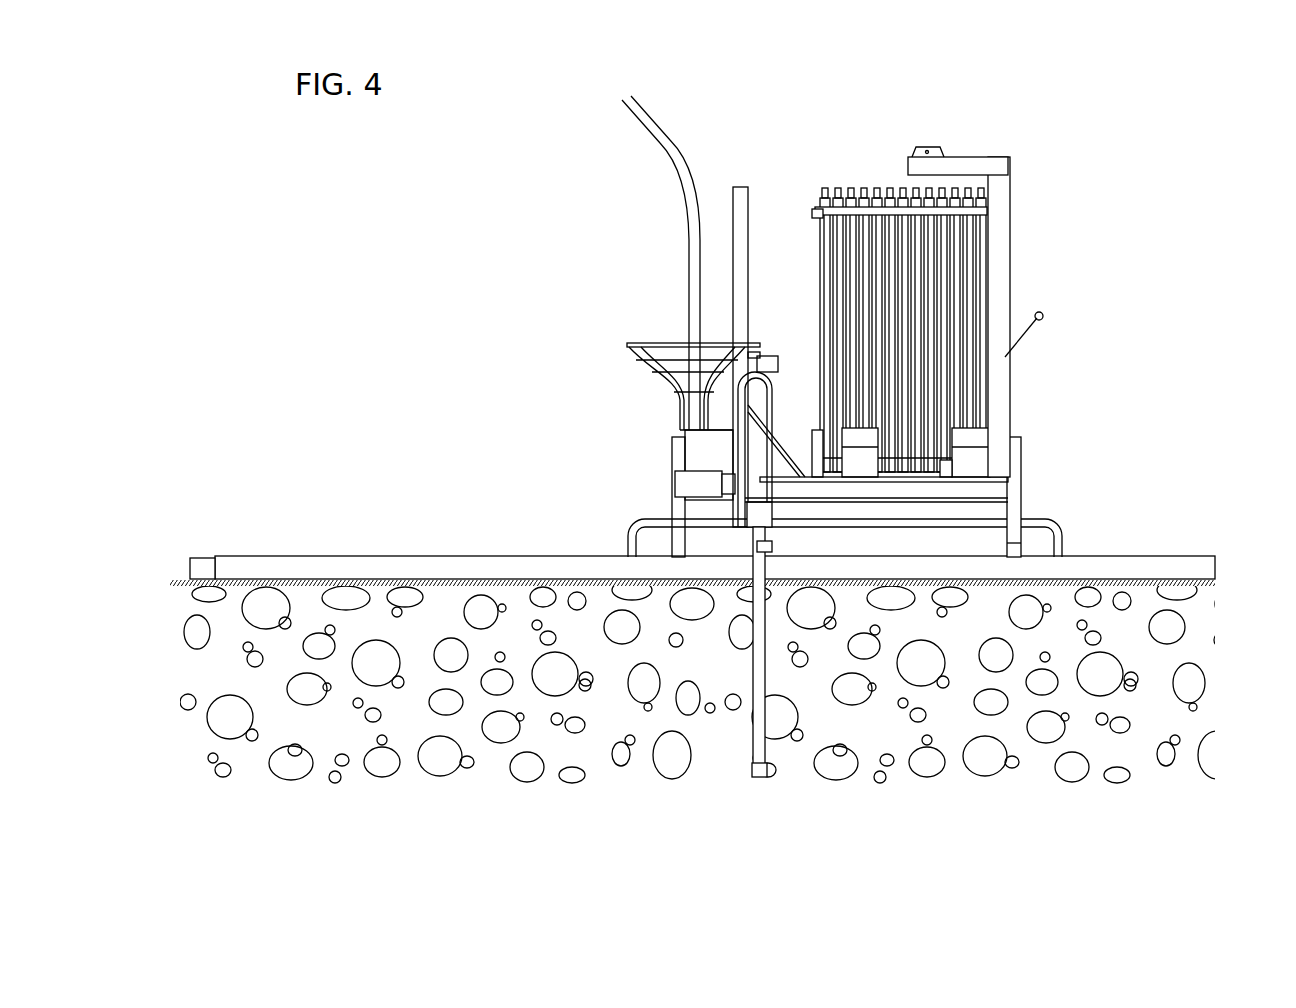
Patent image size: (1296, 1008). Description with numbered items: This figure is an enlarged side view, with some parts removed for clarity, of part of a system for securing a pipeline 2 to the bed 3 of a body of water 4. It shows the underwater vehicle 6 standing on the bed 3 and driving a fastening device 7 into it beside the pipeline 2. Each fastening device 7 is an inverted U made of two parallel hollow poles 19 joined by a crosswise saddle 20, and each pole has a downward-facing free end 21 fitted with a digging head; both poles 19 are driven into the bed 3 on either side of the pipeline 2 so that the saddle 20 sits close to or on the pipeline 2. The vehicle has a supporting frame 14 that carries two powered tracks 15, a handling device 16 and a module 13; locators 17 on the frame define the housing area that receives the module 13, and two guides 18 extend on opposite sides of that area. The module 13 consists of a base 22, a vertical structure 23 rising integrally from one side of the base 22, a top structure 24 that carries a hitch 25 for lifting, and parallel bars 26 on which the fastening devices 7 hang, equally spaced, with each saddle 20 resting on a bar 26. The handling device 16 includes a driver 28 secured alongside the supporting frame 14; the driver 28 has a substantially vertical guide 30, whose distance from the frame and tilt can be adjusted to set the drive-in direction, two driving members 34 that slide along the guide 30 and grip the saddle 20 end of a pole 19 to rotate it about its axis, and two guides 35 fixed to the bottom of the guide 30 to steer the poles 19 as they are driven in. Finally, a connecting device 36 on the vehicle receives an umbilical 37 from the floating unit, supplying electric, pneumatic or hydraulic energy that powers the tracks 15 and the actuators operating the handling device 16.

The pipeline 2 is at (1150, 577).
The bed 3 is at (1195, 676).
The body of water 4 is at (1144, 394).
The underwater vehicle 6 is at (1113, 146).
The fastening device 7 is at (992, 261).
The module 13 is at (1021, 154).
The supporting frame 14 is at (1012, 492).
The powered tracks 15 is at (1070, 544).
The handling device 16 is at (705, 150).
The locators 17 is at (977, 438).
The guides 18 is at (953, 460).
The hollow poles 19 is at (772, 740).
The saddle 20 is at (868, 188).
The free end 21 is at (762, 779).
The base 22 is at (972, 468).
The vertical structure 23 is at (1014, 223).
The top structure 24 is at (978, 150).
The hitch 25 is at (916, 143).
The bars 26 is at (893, 190).
The driver 28 is at (760, 308).
The vertical guide 30 is at (756, 188).
The driving members 34 is at (722, 492).
The guides 35 is at (775, 546).
The device 36 is at (668, 408).
The umbilical 37 is at (695, 262).